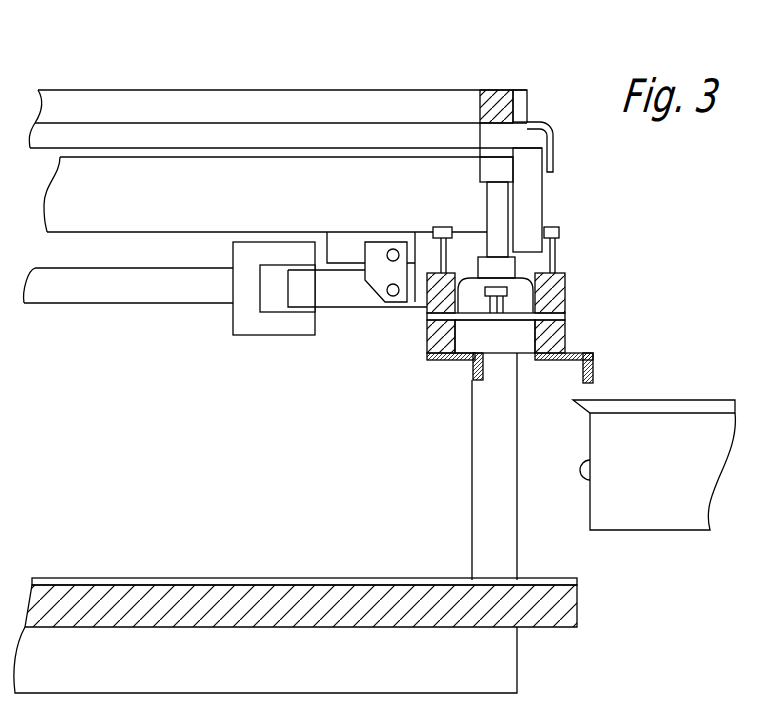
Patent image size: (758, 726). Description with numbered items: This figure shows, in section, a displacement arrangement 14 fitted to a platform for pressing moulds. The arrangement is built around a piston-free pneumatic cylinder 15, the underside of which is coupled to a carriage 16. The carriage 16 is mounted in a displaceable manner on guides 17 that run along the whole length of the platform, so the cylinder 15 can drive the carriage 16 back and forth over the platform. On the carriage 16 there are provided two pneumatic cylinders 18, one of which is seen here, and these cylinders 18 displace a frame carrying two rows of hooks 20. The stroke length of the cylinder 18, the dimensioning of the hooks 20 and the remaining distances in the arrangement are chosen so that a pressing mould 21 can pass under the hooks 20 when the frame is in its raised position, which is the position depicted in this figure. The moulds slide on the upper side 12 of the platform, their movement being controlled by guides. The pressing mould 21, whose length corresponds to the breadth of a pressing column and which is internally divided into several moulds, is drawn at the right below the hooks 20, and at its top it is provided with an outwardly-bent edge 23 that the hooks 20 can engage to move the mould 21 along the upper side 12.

The upper side 12 is at (125, 578).
The displacement arrangement 14 is at (333, 90).
The piston-free pneumatic cylinder 15 is at (228, 214).
The carriage 16 is at (428, 317).
The guides 17 is at (97, 297).
The pneumatic cylinders 18 is at (495, 215).
The hooks 20 is at (470, 388).
The pressing mould 21 is at (662, 493).
The outwardly-bent edge 23 is at (660, 400).